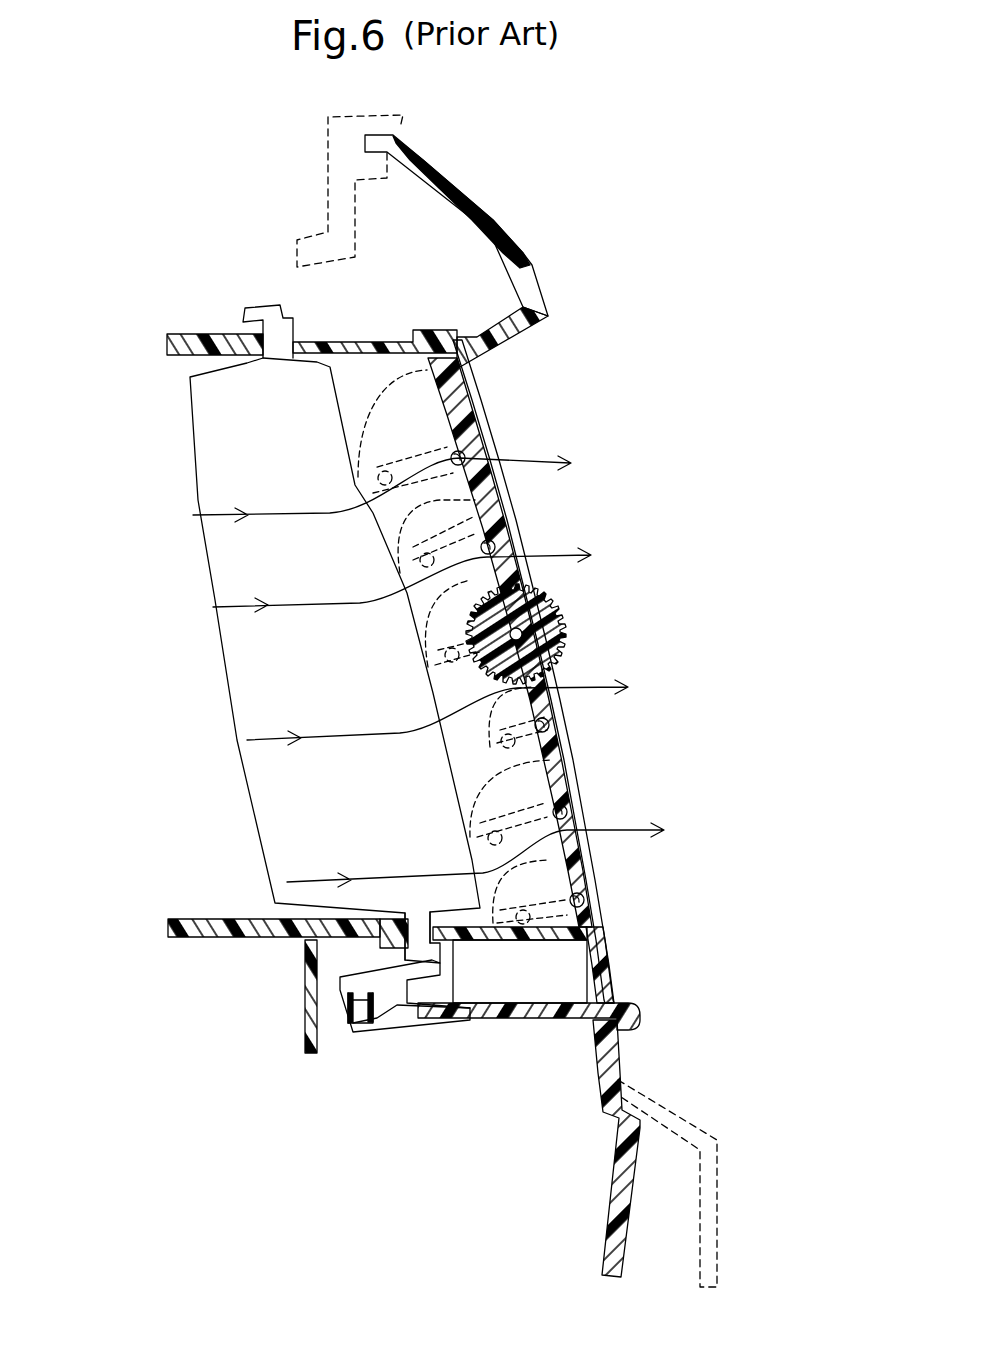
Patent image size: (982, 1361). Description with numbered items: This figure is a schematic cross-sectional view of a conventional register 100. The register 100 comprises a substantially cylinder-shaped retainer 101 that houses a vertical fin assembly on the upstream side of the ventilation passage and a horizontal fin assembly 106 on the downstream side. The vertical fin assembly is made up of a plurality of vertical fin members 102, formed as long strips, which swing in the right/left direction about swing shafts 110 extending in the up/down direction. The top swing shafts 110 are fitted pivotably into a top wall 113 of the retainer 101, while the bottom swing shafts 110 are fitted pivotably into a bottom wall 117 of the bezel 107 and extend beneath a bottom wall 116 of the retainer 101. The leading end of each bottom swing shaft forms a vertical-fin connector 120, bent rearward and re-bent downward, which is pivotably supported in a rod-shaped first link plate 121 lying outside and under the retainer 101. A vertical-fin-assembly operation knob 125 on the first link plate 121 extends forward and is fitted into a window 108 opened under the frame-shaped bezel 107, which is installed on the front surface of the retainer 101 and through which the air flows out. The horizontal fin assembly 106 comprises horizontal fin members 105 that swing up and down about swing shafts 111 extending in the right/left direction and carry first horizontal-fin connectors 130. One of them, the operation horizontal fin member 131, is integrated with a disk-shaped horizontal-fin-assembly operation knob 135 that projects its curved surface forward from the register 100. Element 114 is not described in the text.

The register 100 is at (604, 317).
The retainer 101 is at (200, 338).
The vertical fin members 102 is at (215, 425).
The horizontal fin members 105 is at (462, 412).
The horizontal fin assembly 106 is at (518, 448).
The bezel 107 is at (517, 265).
The window 108 is at (612, 978).
The swing shafts 110 is at (293, 340).
The swing shafts 111 is at (460, 458).
The top wall 113 is at (222, 343).
The upper flange 114 is at (493, 233).
The bottom wall 116 is at (322, 942).
The bottom wall 117 is at (517, 935).
The vertical-fin connector 120 is at (410, 967).
The first link plate 121 is at (378, 1035).
The vertical-fin-assembly operation knob 125 is at (612, 996).
The first horizontal-fin connectors 130 is at (545, 757).
The operation horizontal fin member 131 is at (513, 590).
The horizontal-fin-assembly operation knob 135 is at (567, 640).